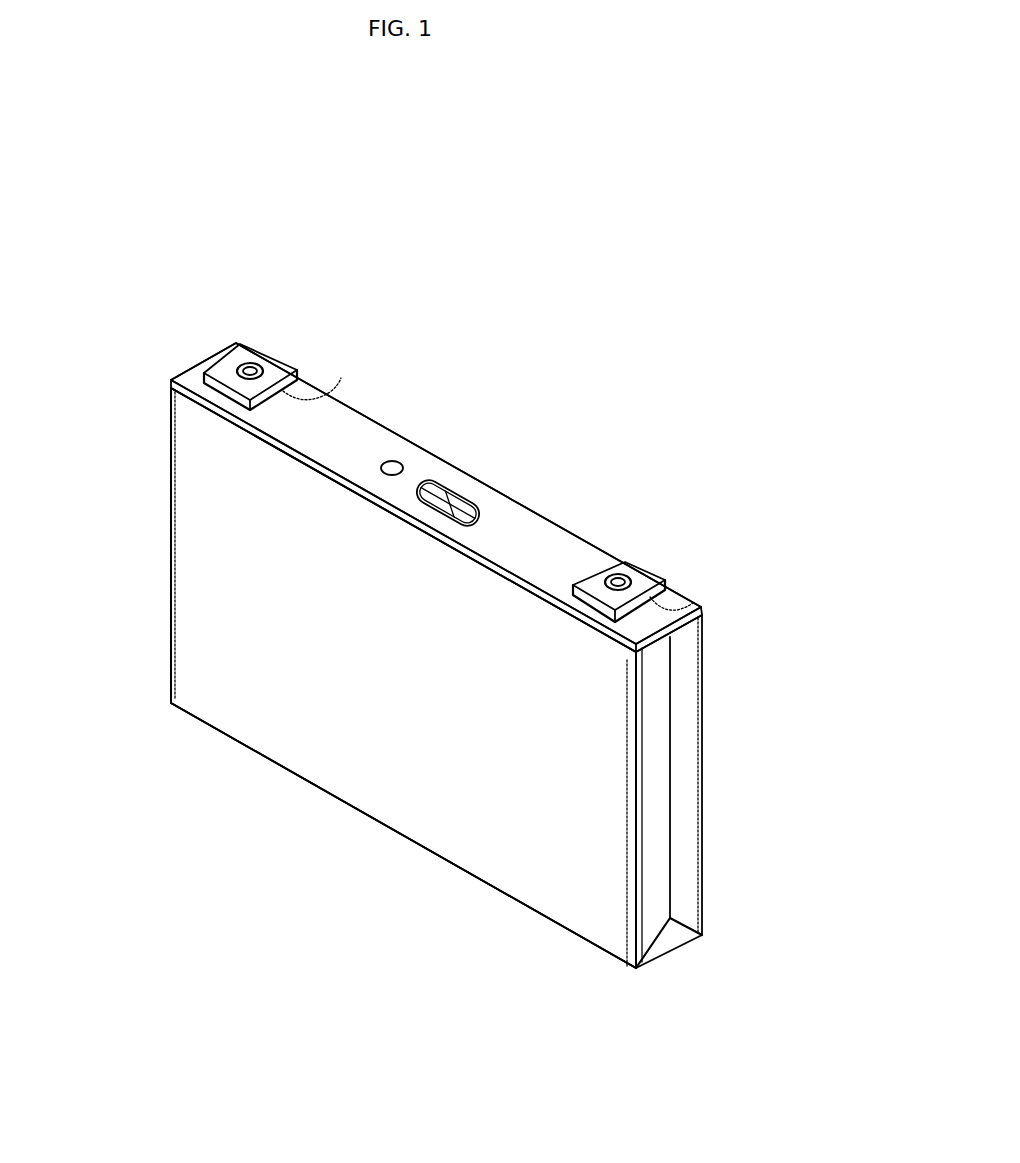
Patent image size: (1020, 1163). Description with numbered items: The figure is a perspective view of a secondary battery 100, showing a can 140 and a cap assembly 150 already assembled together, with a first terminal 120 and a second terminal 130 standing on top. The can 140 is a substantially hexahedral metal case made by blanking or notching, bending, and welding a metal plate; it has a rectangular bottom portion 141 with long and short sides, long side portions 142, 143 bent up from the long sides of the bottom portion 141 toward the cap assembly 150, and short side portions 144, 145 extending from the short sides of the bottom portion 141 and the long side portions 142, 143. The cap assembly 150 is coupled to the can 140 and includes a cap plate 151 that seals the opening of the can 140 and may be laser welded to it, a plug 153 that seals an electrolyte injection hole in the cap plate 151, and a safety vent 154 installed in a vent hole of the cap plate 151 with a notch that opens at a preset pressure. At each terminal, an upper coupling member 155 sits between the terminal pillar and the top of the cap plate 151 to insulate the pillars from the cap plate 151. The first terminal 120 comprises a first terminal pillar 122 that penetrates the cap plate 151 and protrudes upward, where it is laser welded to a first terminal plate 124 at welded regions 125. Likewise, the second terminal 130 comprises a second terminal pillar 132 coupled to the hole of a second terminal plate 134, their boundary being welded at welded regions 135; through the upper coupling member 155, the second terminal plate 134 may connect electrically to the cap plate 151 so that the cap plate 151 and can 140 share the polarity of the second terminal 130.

The secondary battery 100 is at (756, 255).
The first terminal 120 is at (290, 317).
The first terminal pillar 122 is at (247, 364).
The first terminal plate 124 is at (288, 368).
The welded regions 125 is at (259, 367).
The second terminal 130 is at (658, 527).
The second terminal pillar 132 is at (613, 575).
The second terminal plate 134 is at (657, 577).
The welded regions 135 is at (628, 578).
The can 140 is at (345, 823).
The bottom portion 141 is at (447, 868).
The long side portion 142 is at (283, 732).
The long side portion 143 is at (722, 632).
The short side portion 144 is at (683, 745).
The short side portion 145 is at (160, 528).
The cap assembly 150 is at (563, 525).
The cap plate 151 is at (507, 520).
The plug 153 is at (393, 460).
The safety vent 154 is at (448, 489).
The upper coupling member 155 is at (323, 397).